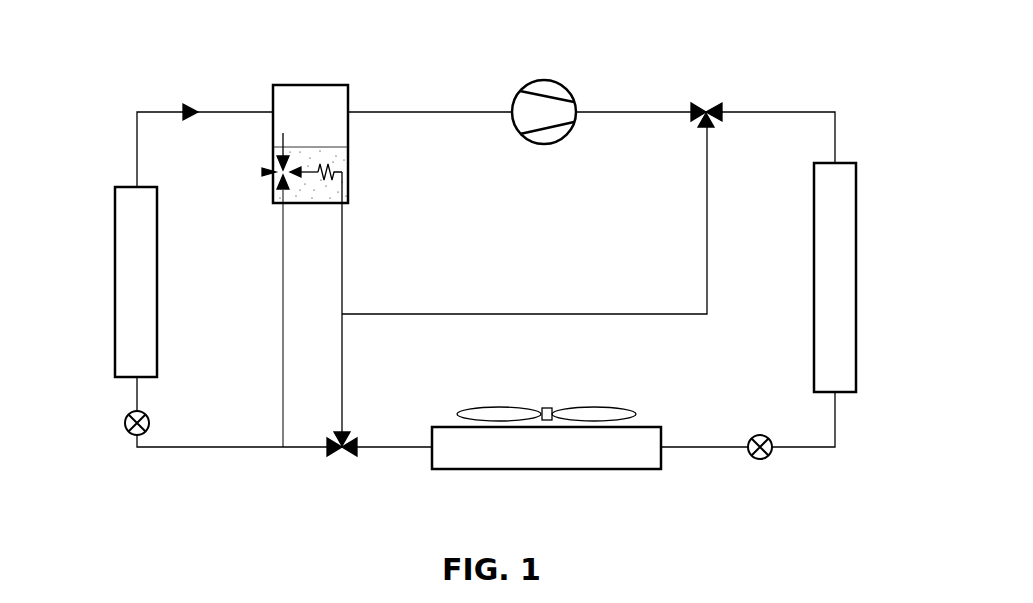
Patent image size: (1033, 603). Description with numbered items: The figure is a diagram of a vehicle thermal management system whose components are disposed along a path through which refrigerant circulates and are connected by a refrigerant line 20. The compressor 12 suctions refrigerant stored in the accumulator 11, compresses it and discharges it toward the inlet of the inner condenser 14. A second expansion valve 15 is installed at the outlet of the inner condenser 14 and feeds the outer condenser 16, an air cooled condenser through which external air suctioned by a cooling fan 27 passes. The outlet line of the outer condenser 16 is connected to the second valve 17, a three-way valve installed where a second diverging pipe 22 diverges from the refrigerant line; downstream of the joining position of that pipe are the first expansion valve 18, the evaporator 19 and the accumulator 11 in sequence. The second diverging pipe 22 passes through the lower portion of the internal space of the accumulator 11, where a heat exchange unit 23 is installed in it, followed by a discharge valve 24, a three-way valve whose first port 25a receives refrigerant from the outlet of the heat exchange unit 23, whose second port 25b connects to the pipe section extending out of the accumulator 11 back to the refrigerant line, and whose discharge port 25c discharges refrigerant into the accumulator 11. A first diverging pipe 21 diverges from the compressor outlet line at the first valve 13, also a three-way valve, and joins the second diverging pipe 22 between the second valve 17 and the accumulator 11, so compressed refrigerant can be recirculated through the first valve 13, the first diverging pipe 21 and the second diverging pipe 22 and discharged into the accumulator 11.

The accumulator 11 is at (281, 85).
The compressor 12 is at (544, 80).
The first valve 13 is at (706, 103).
The inner condenser 14 is at (858, 186).
The second expansion valve 15 is at (760, 434).
The outer condenser 16 is at (535, 469).
The second valve 17 is at (352, 432).
The first expansion valve 18 is at (124, 423).
The evaporator 19 is at (113, 290).
The refrigerant line 20 is at (137, 150).
The first diverging pipe 21 is at (706, 218).
The second diverging pipe 22 is at (283, 245).
The heat exchange unit 23 is at (330, 165).
The discharge valve 24 is at (262, 175).
The first port 25a is at (292, 170).
The second port 25b is at (276, 186).
The discharge port 25c is at (278, 156).
The cooling fan 27 is at (592, 408).